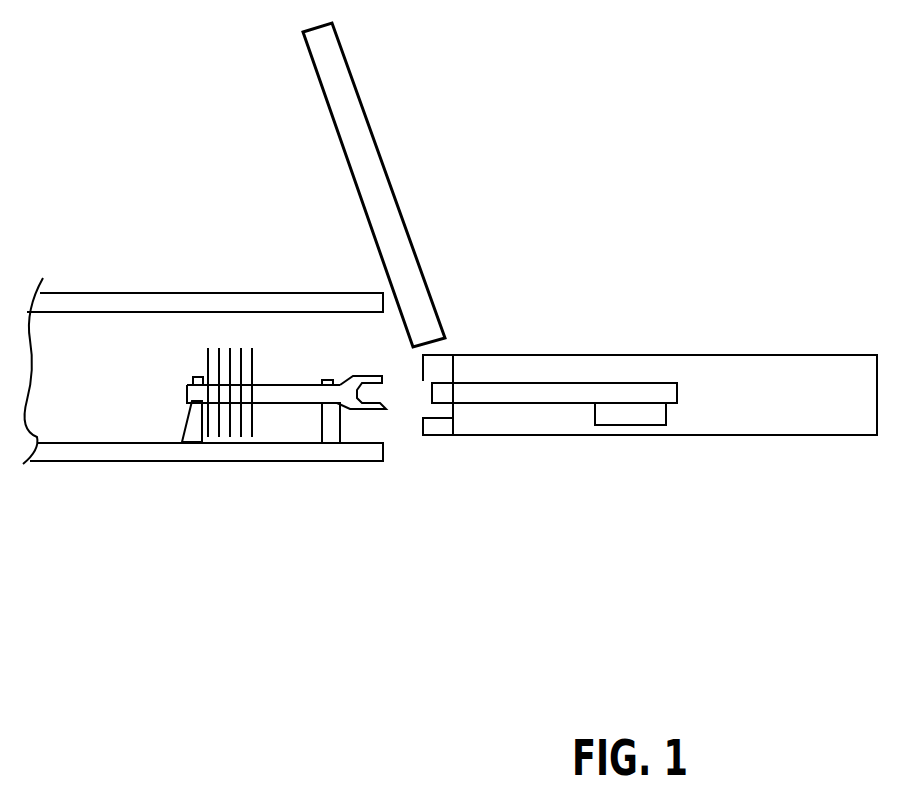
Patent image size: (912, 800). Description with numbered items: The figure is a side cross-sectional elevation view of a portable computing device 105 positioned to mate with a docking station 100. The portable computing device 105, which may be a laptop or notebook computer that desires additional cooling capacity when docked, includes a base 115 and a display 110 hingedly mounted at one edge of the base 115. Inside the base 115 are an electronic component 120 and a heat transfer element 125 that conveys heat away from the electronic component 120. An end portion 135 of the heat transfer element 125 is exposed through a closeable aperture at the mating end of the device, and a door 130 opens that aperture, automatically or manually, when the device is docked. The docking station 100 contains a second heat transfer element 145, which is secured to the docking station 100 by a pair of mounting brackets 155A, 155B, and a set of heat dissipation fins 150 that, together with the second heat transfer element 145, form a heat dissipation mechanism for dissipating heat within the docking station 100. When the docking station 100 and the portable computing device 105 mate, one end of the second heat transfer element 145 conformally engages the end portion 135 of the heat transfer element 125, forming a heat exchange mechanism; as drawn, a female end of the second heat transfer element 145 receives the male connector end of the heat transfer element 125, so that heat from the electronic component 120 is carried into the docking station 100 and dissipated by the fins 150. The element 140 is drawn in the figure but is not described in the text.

The docking station 100 is at (188, 473).
The portable computing device 105 is at (615, 185).
The display 110 is at (348, 42).
The base 115 is at (803, 427).
The electronic component 120 is at (666, 418).
The heat transfer element 125 is at (662, 383).
The door 130 is at (426, 367).
The end portion 135 is at (425, 402).
The latch 140 is at (377, 398).
The second heat transfer element 145 is at (277, 382).
The heat dissipation fins 150 is at (230, 343).
The mounting bracket 155A is at (176, 415).
The mounting bracket 155B is at (320, 421).